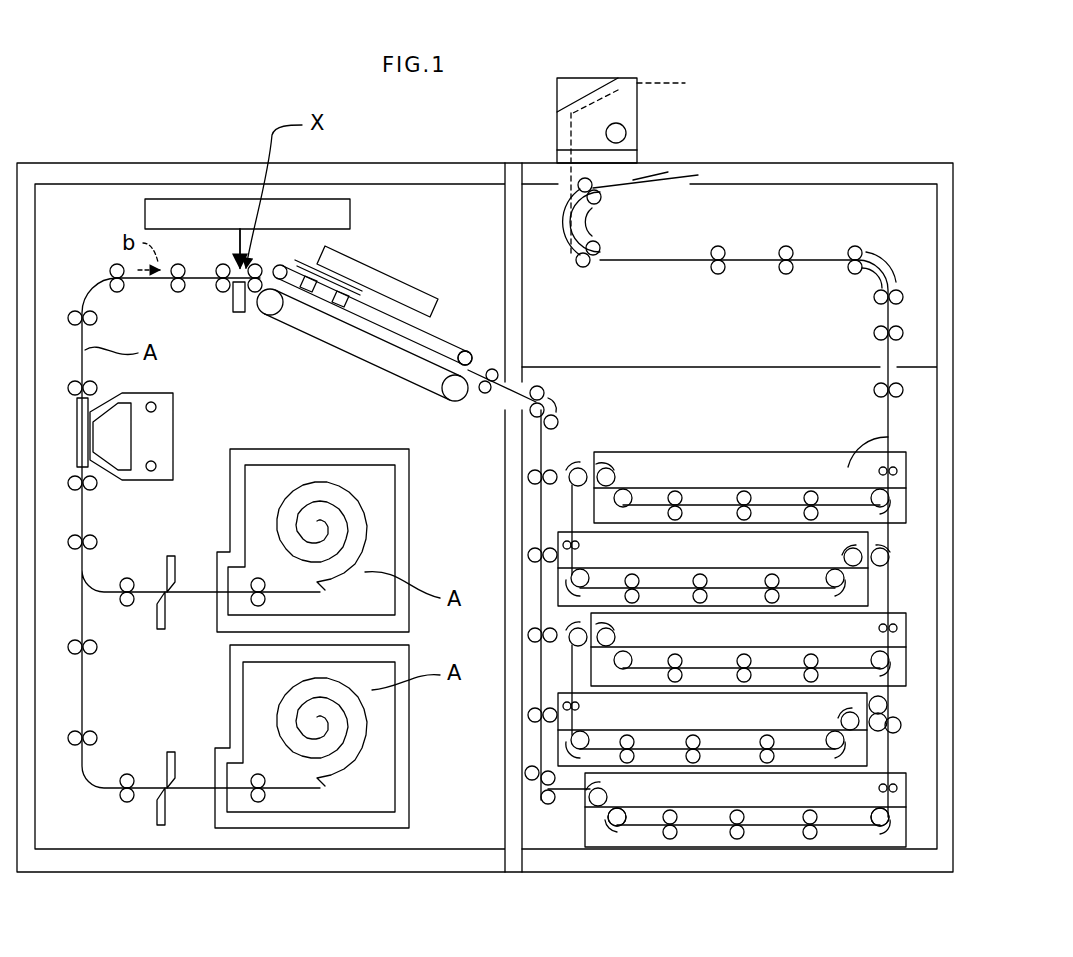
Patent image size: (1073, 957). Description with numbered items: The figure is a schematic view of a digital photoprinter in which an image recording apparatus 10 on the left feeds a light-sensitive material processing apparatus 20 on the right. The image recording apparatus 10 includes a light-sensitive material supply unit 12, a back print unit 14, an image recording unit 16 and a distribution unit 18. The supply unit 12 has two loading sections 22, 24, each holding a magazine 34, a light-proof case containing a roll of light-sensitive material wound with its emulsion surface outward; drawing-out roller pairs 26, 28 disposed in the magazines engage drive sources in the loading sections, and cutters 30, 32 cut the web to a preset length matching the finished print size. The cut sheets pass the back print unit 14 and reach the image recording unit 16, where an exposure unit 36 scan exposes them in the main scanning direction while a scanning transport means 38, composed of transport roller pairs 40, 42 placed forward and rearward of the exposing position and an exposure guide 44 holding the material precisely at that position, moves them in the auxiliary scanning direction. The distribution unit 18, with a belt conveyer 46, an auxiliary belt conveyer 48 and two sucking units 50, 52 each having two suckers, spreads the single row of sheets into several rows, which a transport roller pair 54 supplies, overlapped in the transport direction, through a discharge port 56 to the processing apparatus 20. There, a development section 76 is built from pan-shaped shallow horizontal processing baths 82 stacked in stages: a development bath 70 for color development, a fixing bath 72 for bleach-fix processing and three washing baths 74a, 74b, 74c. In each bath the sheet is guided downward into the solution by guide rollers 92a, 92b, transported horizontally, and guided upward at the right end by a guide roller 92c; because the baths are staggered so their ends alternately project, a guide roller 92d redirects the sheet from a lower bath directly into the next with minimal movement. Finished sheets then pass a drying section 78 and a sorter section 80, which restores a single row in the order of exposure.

The image recording apparatus 10 is at (445, 813).
The light-sensitive material supply unit 12 is at (425, 518).
The back print unit 14 is at (173, 420).
The image recording unit 16 is at (95, 275).
The distribution unit 18 is at (407, 278).
The light-sensitive material processing apparatus 20 is at (540, 835).
The loading section 22 is at (409, 545).
The loading section 24 is at (409, 750).
The drawing-out roller pair 26 is at (255, 608).
The drawing-out roller pair 28 is at (250, 780).
The cutter 30 is at (165, 615).
The cutter 32 is at (170, 750).
The magazine 34 is at (348, 465).
The exposure unit 36 is at (222, 215).
The scanning transport means 38 is at (236, 298).
The transport roller pair 40 is at (216, 287).
The transport roller pair 42 is at (272, 303).
The exposure guide 44 is at (240, 312).
The belt conveyer 46 is at (395, 377).
The auxiliary belt conveyer 48 is at (466, 350).
The sucking unit 50 is at (335, 329).
The sucking unit 52 is at (308, 286).
The transport roller pair 54 is at (487, 393).
The discharge port 56 is at (545, 390).
The development bath 70 is at (876, 796).
The fixing bath 72 is at (864, 746).
The washing bath 74a is at (876, 637).
The washing bath 74b is at (862, 587).
The washing bath 74c is at (852, 465).
The development section 76 is at (916, 542).
The drying section 78 is at (727, 250).
The sorter section 80 is at (682, 126).
The processing bath 82 is at (765, 848).
The guide roller 92a is at (598, 806).
The guide roller 92b is at (622, 822).
The guide roller 92c is at (892, 814).
The guide roller 92d is at (892, 709).